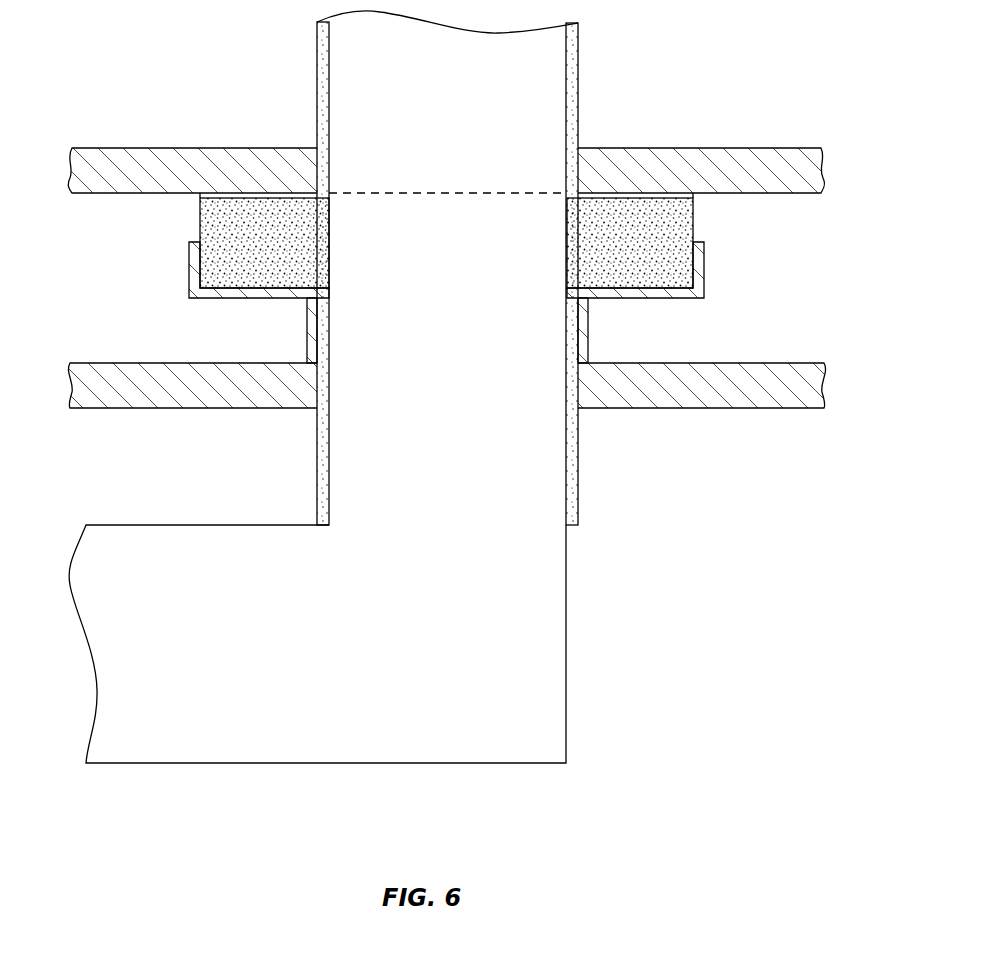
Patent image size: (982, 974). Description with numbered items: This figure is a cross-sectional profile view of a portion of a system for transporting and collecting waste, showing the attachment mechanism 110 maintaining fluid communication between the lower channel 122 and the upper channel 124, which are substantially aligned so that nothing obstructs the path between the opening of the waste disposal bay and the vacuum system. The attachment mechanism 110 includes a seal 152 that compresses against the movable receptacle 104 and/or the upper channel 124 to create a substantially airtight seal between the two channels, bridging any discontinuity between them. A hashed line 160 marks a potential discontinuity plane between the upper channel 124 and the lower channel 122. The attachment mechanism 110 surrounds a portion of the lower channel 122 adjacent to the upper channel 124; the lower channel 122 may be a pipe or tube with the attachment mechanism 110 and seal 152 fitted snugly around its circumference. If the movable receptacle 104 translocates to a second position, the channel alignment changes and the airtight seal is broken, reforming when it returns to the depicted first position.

The movable receptacle 104 is at (176, 158).
The attachment mechanism 110 is at (202, 227).
The lower channel 122 is at (548, 681).
The upper channel 124 is at (548, 88).
The seal 152 is at (200, 198).
The hashed line 160 is at (401, 194).